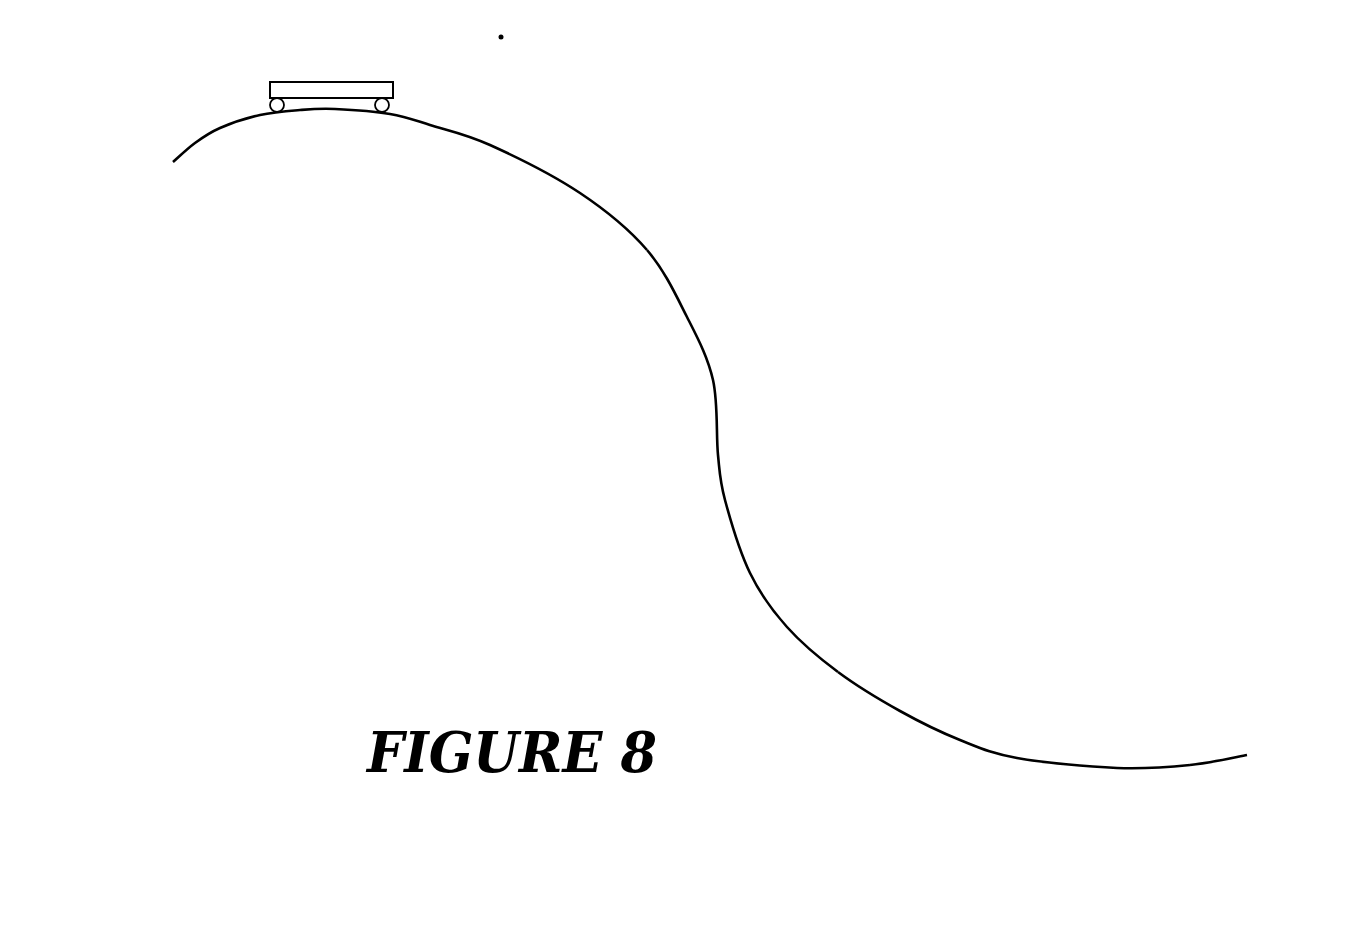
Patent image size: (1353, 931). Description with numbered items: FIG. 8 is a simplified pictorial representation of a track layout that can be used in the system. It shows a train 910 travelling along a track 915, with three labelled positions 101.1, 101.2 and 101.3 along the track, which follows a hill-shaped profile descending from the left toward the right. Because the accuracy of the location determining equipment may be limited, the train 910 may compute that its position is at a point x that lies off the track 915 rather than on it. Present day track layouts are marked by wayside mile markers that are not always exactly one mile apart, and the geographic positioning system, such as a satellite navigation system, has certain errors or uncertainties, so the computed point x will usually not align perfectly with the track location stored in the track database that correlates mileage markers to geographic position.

The train 910 is at (395, 79).
The first track section (hill crest) 101.1 is at (186, 149).
The second track section (descent) 101.2 is at (739, 457).
The third track section (valley) 101.3 is at (1017, 758).
The track 915 is at (1232, 765).
The point X x is at (512, 30).